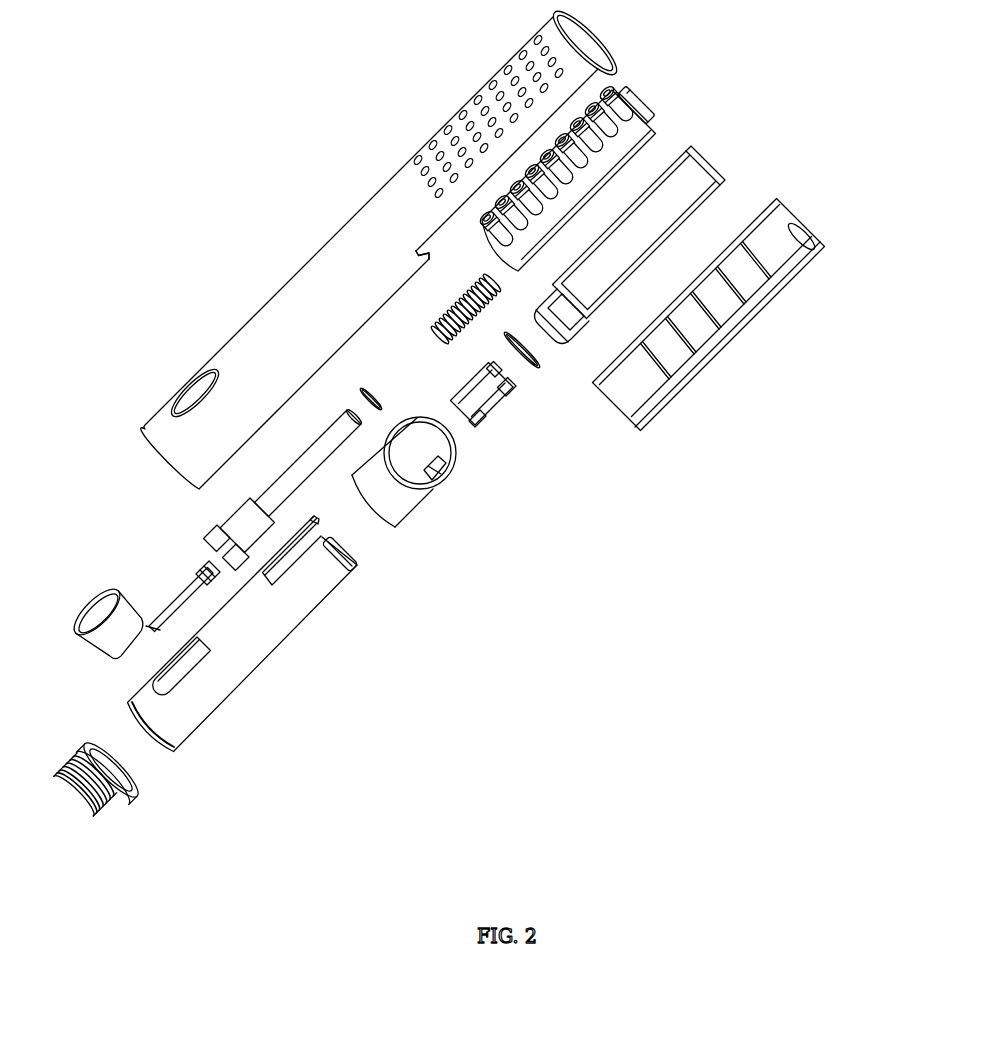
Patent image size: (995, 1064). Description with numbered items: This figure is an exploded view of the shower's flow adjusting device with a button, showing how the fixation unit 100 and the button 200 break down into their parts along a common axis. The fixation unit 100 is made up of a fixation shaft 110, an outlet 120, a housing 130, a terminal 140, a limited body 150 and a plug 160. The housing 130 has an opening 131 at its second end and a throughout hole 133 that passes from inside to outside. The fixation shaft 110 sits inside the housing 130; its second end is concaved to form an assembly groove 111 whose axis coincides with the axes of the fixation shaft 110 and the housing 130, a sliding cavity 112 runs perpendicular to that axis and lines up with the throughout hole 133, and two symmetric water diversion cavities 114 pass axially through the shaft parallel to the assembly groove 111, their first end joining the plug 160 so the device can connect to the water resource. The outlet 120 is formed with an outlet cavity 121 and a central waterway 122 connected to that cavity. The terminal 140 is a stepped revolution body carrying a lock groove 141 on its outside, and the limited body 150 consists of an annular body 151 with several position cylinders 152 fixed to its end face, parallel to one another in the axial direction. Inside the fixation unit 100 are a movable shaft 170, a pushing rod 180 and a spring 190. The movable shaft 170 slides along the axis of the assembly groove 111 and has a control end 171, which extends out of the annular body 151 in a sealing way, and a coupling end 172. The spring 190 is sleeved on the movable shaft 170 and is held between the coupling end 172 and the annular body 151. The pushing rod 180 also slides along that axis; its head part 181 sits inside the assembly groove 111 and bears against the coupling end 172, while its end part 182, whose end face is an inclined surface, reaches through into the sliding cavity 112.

The fixation unit 100 is at (268, 193).
The fixation shaft 110 is at (262, 635).
The assembly groove 111 is at (273, 580).
The sliding cavity 112 is at (182, 663).
The water diversion cavities 114 is at (355, 562).
The outlet 120 is at (682, 140).
The outlet cavity 121 is at (683, 188).
The central waterway 122 is at (580, 312).
The housing 130 is at (330, 272).
The opening 131 is at (437, 242).
The throughout hole 133 is at (200, 395).
The terminal 140 is at (410, 495).
The lock groove 141 is at (430, 478).
The limited body 150 is at (513, 405).
The annular body 151 is at (475, 425).
The position cylinders 152 is at (510, 387).
The plug 160 is at (117, 805).
The movable shaft 170 is at (308, 468).
The control end 171 is at (347, 410).
The coupling end 172 is at (215, 535).
The pushing rod 180 is at (178, 597).
The head part 181 is at (195, 567).
The end part 182 is at (157, 622).
The spring 190 is at (440, 330).
The button 200 is at (105, 612).